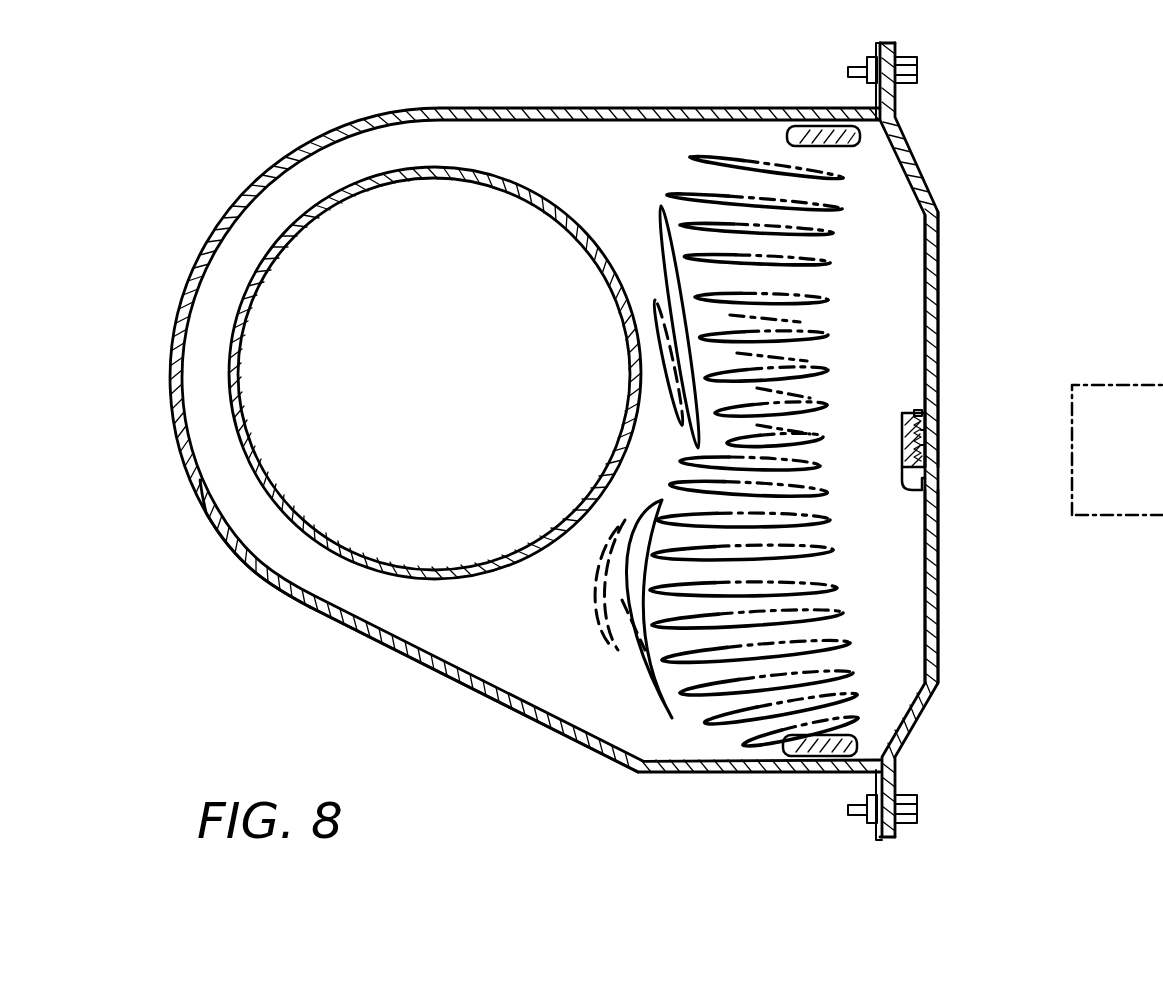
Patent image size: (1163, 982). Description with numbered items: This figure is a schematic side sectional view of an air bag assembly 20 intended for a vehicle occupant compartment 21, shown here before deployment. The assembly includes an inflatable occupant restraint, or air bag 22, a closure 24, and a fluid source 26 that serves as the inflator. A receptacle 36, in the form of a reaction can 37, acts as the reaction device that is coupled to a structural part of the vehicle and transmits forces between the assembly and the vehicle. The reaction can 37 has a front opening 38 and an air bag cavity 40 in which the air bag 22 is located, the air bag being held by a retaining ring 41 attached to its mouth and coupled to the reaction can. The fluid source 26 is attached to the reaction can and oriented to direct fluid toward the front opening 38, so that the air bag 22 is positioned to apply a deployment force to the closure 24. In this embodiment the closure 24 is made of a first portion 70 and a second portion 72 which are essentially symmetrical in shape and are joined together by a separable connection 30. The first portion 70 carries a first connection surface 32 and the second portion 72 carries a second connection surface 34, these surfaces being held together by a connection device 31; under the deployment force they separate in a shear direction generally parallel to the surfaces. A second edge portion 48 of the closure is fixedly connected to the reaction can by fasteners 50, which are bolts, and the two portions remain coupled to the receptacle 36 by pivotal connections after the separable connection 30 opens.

The air bag assembly 20 is at (312, 124).
The vehicle occupant compartment 21 is at (1135, 470).
The inflatable occupant restraint 22 is at (670, 188).
The closure 24 is at (941, 214).
The fluid source 26 is at (500, 182).
The separable connection 30 is at (948, 460).
The connection device 31 is at (916, 410).
The first connection surface 32 is at (927, 438).
The second connection surface 34 is at (903, 437).
The receptacle 36 is at (485, 706).
The reaction can 37 is at (303, 615).
The front opening 38 is at (898, 613).
The air bag cavity 40 is at (685, 748).
The retaining ring 41 is at (790, 125).
The second edge portion 48 is at (897, 118).
The fasteners 50 is at (898, 48).
The first portion 70 is at (938, 330).
The second portion 72 is at (938, 597).